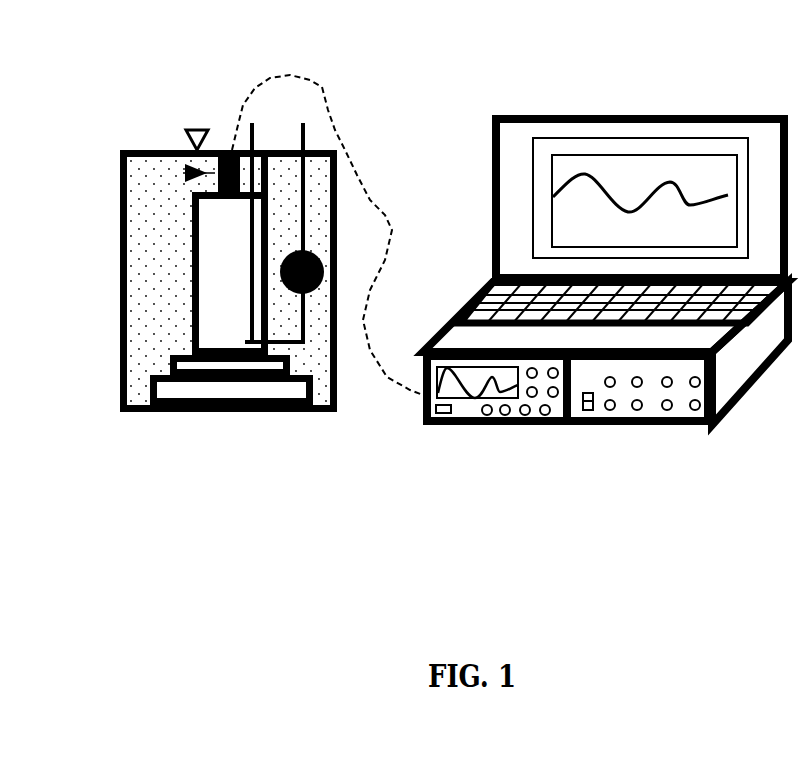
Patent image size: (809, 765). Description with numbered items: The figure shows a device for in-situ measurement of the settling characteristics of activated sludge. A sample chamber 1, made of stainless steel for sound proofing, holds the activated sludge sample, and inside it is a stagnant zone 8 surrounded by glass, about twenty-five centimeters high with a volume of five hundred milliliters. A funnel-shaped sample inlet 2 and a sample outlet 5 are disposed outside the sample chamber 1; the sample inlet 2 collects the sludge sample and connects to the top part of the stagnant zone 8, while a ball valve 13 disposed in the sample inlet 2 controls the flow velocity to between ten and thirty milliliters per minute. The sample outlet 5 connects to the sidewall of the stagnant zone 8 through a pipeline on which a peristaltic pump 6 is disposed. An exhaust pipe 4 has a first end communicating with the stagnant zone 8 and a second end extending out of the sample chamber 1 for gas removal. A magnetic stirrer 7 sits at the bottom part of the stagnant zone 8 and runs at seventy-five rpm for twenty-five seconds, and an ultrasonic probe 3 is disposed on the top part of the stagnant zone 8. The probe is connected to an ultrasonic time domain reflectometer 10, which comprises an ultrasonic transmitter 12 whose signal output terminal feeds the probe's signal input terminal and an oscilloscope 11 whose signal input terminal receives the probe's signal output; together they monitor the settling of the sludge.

The sample chamber 1 is at (155, 150).
The sample inlet 2 is at (198, 120).
The ultrasonic probe 3 is at (225, 150).
The exhaust pipe 4 is at (274, 216).
The sample outlet 5 is at (306, 214).
The peristaltic pump 6 is at (320, 258).
The magnetic stirrer 7 is at (232, 387).
The stagnant zone 8 is at (213, 317).
The ultrasonic time domain reflectometer 10 is at (553, 116).
The oscilloscope 11 is at (492, 425).
The ultrasonic transmitter 12 is at (630, 425).
The ball valve 13 is at (183, 177).